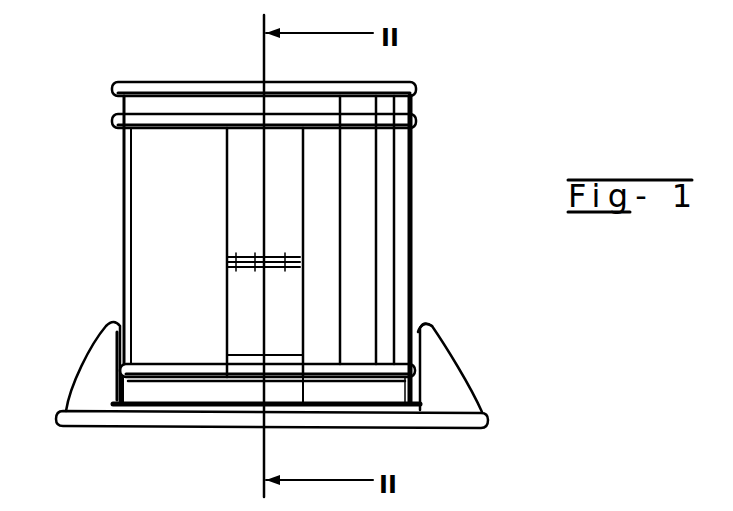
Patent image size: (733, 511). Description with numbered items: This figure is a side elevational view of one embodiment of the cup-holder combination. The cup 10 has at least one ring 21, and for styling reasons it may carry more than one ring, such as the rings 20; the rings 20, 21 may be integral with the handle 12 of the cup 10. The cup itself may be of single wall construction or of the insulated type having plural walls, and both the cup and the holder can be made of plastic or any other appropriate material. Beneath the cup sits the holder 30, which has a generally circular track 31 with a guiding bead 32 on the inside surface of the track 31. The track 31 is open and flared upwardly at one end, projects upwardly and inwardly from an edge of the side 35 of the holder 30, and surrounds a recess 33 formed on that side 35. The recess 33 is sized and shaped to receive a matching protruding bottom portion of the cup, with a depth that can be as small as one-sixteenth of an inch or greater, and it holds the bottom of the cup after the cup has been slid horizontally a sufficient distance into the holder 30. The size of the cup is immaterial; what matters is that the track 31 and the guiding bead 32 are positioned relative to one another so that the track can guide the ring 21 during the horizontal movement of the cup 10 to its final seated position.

The cup 10 is at (413, 217).
The handle 12 is at (287, 218).
The rings 20 is at (113, 119).
The ring 21 is at (110, 362).
The holder 30 is at (63, 427).
The track 31 is at (85, 383).
The guiding bead 32 is at (430, 327).
The recess 33 is at (122, 403).
The side 35 is at (247, 412).